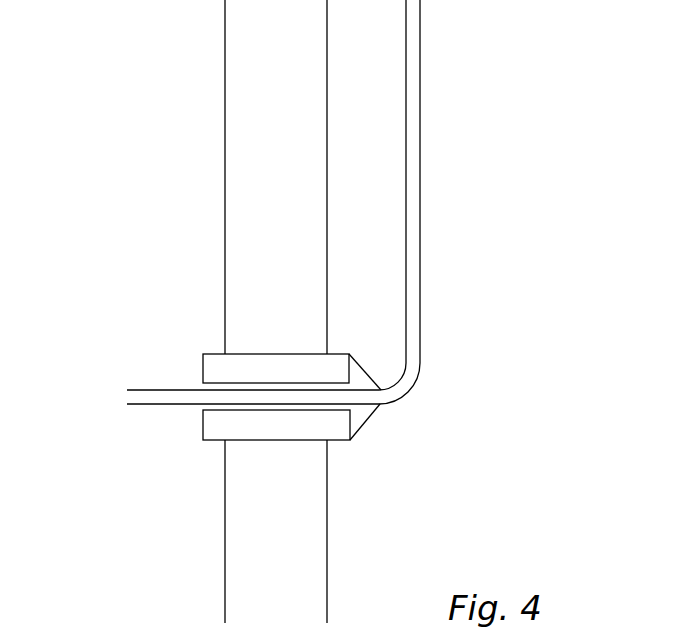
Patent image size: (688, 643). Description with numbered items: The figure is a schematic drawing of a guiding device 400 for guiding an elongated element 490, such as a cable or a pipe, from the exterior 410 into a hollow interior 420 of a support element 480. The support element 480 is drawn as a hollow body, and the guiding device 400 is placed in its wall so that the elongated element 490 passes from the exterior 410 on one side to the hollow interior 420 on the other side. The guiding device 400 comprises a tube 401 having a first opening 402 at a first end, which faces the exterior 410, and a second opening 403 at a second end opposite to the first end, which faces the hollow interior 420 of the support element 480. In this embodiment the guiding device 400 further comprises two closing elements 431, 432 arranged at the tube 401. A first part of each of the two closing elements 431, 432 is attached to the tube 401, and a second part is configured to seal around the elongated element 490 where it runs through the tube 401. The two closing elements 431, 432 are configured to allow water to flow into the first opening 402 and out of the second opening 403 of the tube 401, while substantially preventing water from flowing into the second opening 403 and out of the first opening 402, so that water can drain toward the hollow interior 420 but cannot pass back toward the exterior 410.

The guiding device 400 is at (192, 445).
The tube 401 is at (201, 531).
The first opening 402 is at (192, 383).
The second opening 403 is at (382, 473).
The exterior 410 is at (93, 158).
The hollow interior 420 is at (615, 158).
The closing element 431 is at (416, 366).
The closing element 432 is at (414, 430).
The support element 480 is at (202, 177).
The elongated element 490 is at (322, 202).